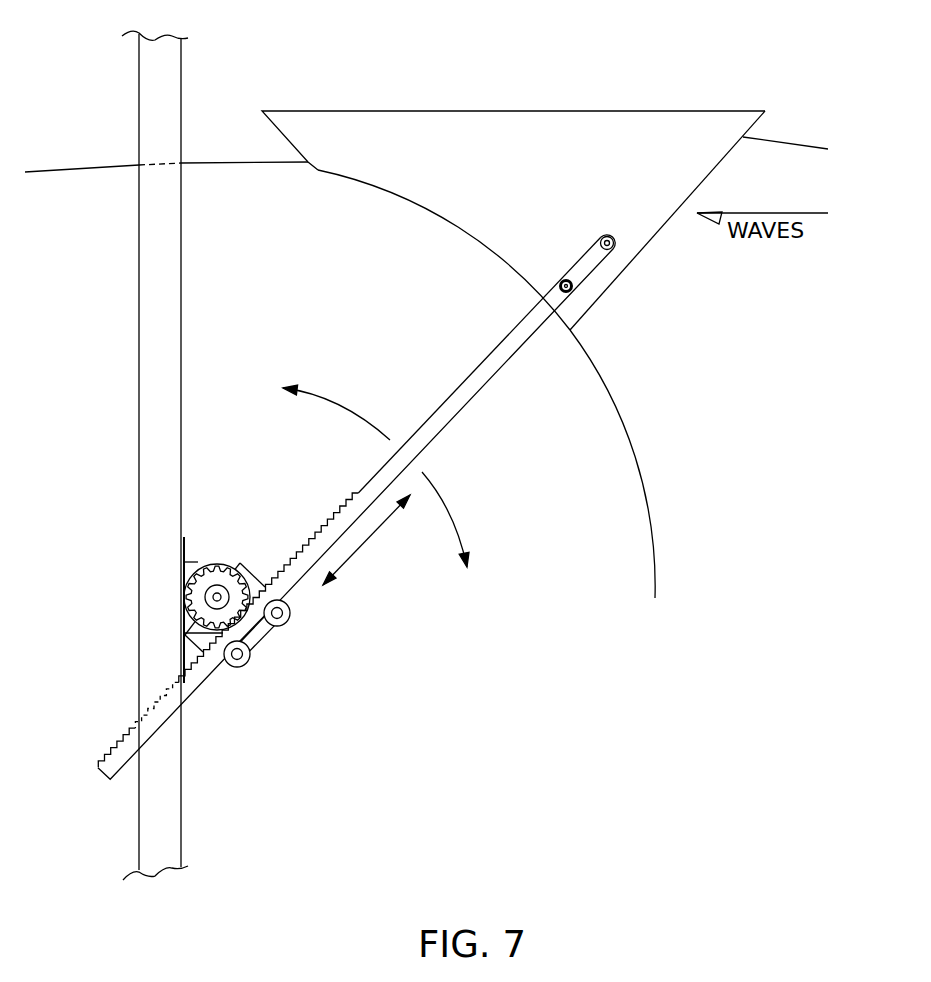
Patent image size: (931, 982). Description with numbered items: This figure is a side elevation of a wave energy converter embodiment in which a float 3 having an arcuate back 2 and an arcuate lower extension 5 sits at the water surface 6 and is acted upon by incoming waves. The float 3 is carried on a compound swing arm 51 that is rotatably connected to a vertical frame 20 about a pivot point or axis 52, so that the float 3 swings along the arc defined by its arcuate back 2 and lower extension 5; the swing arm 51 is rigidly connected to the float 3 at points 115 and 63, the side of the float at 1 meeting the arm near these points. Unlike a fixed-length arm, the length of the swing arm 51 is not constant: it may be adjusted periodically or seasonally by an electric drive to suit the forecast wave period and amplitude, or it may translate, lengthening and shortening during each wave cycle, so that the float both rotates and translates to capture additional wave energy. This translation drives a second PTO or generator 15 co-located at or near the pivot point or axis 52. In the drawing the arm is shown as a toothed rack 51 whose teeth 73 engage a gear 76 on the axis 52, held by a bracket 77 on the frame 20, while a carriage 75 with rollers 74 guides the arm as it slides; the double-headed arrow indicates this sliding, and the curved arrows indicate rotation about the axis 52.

The floating body side 1 is at (636, 257).
The arcuate back 2 is at (468, 242).
The float 3 is at (495, 151).
The arcuate lower extension 5 is at (640, 456).
The water surface 6 is at (80, 165).
The second PTO or generator 15 is at (233, 562).
The vertical frame 20 is at (178, 420).
The swing arm 51 is at (433, 428).
The pivot point or axis 52 is at (206, 594).
The connection point 63 is at (604, 237).
The rack teeth 73 is at (311, 543).
The guide rollers 74 is at (287, 623).
The roller carriage 75 is at (253, 583).
The gear 76 is at (210, 562).
The bracket 77 is at (183, 617).
The connection point 115 is at (563, 281).